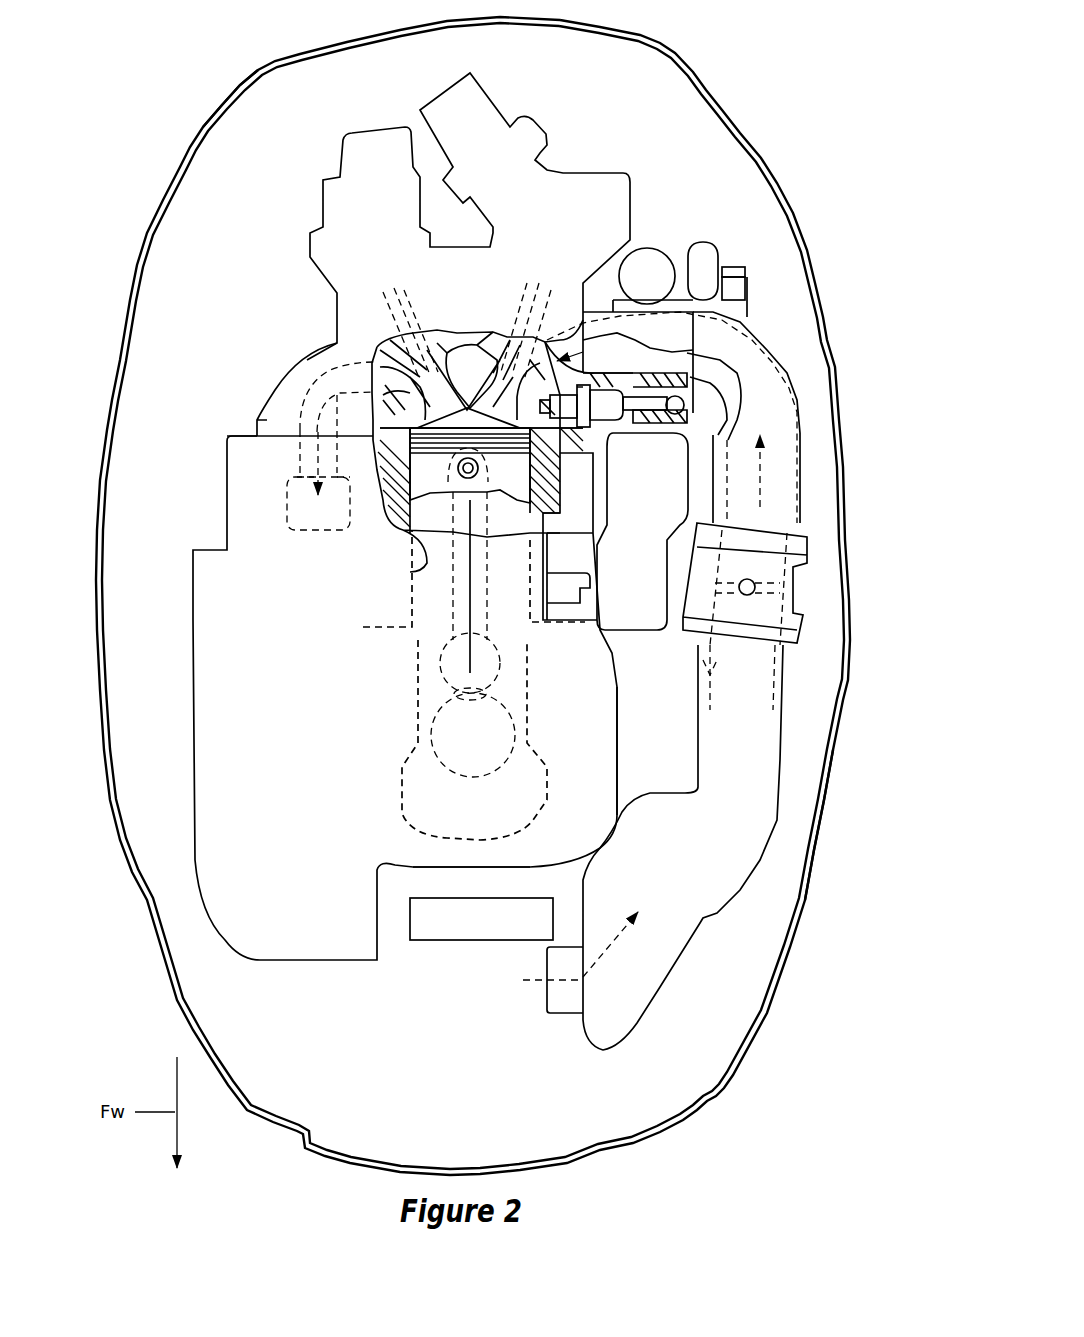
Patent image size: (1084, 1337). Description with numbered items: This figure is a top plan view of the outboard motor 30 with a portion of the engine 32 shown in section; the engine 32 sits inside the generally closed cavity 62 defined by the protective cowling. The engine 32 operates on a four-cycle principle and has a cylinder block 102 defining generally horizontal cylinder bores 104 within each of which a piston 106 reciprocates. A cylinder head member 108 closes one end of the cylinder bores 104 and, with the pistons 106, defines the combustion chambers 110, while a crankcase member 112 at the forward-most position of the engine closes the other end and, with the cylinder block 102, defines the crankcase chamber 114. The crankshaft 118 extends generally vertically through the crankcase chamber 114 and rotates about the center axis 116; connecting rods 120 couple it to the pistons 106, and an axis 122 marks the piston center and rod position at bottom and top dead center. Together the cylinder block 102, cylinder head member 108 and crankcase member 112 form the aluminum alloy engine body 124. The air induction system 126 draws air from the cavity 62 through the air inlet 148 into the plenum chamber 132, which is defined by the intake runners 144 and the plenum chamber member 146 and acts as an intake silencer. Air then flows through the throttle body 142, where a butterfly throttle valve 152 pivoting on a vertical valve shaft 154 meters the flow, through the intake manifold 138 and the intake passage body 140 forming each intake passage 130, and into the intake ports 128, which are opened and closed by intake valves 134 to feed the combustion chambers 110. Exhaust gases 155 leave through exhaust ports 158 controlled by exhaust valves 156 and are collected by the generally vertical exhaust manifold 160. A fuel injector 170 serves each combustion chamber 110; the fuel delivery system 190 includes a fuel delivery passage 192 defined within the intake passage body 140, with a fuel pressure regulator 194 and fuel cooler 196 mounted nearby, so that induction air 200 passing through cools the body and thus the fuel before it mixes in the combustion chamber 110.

The outboard motor 30 is at (158, 120).
The engine 32 is at (205, 285).
The cavity 62 is at (257, 133).
The cylinder block 102 is at (550, 505).
The cylinder bore 104 is at (423, 540).
The piston 106 is at (425, 480).
The cylinder head member 108 is at (303, 360).
The combustion chamber 110 is at (425, 452).
The crankcase member 112 is at (453, 867).
The crankcase chamber 114 is at (533, 847).
The center axis 116 is at (470, 730).
The crankshaft 118 is at (443, 763).
The connecting rod 120 is at (440, 605).
The axis 122 is at (470, 653).
The engine body 124 is at (553, 553).
The air induction system 126 is at (799, 835).
The intake port 128 is at (547, 340).
The intake passage 130 is at (727, 380).
The plenum chamber 132 is at (680, 833).
The intake valve 134 is at (470, 375).
The intake manifold 138 is at (803, 497).
The intake passage body 140 is at (607, 313).
The throttle body 142 is at (797, 593).
The intake runner 144 is at (737, 717).
The plenum chamber member 146 is at (696, 753).
The air inlet 148 is at (547, 967).
The throttle valve 152 is at (710, 663).
The valve shaft 154 is at (750, 573).
The exhaust gases 155 is at (300, 417).
The exhaust valve 156 is at (455, 385).
The exhaust port 158 is at (385, 390).
The exhaust manifold 160 is at (287, 517).
The fuel injector 170 is at (617, 417).
The fuel delivery system 190 is at (598, 620).
The fuel delivery passage 192 is at (687, 280).
The fuel pressure regulator 194 is at (647, 263).
The fuel cooler 196 is at (713, 282).
The induction air 200 is at (647, 400).